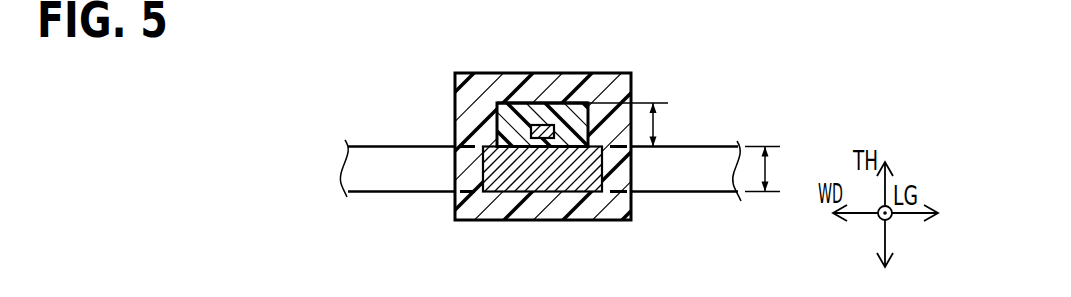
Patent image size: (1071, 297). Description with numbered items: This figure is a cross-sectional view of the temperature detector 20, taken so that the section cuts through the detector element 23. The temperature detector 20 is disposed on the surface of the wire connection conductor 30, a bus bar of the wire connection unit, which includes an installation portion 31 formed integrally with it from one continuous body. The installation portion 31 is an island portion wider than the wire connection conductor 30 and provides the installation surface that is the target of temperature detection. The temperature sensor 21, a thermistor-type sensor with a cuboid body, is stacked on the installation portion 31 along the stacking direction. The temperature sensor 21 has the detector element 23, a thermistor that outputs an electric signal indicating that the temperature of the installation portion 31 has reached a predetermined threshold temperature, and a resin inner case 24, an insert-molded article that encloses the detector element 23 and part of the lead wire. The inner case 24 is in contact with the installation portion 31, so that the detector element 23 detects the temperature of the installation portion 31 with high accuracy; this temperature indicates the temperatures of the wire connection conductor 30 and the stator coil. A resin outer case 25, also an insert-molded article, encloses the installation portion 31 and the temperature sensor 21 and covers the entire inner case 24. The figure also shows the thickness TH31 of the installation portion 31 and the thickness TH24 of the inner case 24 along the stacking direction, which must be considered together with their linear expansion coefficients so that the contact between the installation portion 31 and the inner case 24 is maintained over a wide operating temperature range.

The temperature detector 20 is at (402, 73).
The temperature sensor 21 is at (493, 98).
The detector element 23 is at (535, 125).
The inner case 24 is at (570, 102).
The outer case 25 is at (455, 110).
The wire connection conductor 30 is at (707, 146).
The installation portion 31 is at (568, 194).
The thickness of the inner case TH24 is at (655, 130).
The thickness of the installation portion TH31 is at (768, 169).